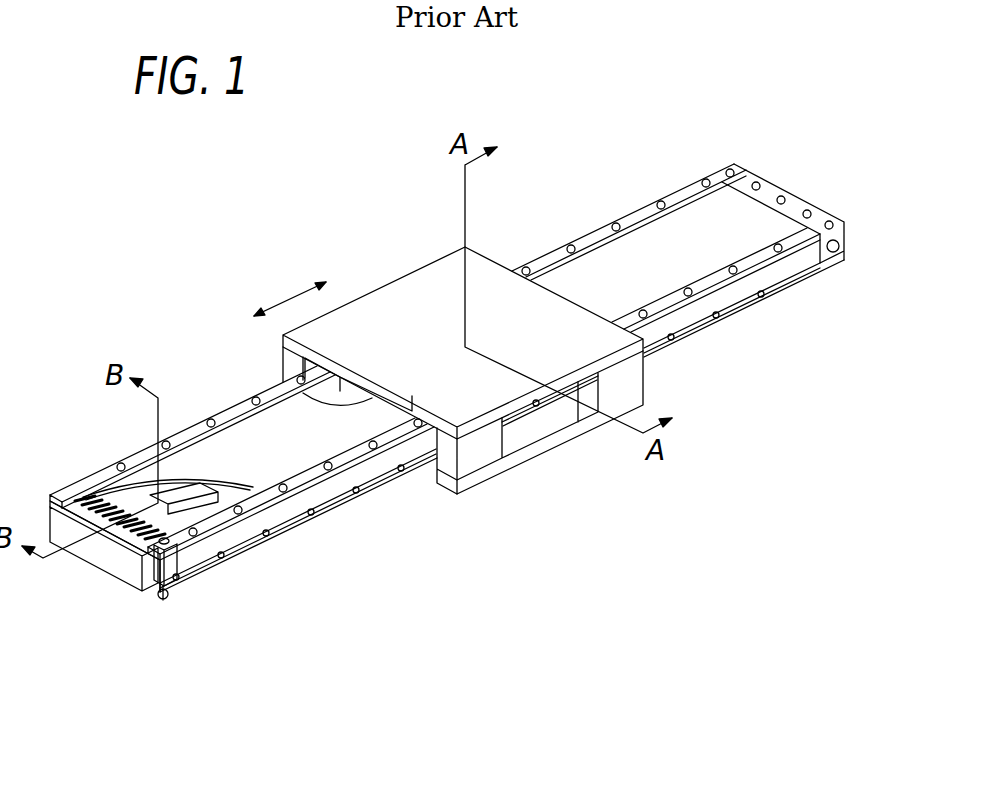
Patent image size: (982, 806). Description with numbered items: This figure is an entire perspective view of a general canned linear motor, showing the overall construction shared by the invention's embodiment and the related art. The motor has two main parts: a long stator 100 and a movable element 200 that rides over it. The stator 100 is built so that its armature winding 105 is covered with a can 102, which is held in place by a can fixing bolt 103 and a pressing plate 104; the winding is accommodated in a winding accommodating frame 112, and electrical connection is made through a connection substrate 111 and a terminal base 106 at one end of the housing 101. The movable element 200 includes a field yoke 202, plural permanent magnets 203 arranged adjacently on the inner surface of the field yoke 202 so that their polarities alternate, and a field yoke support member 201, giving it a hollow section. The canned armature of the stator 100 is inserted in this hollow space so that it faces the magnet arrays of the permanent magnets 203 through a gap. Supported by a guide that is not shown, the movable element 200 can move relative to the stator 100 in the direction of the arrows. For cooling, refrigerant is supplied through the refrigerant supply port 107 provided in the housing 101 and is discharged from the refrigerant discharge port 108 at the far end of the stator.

The stator 100 is at (152, 445).
The housing 101 is at (370, 470).
The can 102 is at (284, 461).
The can fixing bolt 103 is at (570, 247).
The pressing plate 104 is at (618, 221).
The armature winding 105 is at (230, 527).
The terminal base 106 is at (103, 560).
The refrigerant supply port 107 is at (182, 568).
The refrigerant discharge port 108 is at (835, 254).
The connection substrate 111 is at (152, 589).
The winding accommodating frame 112 is at (228, 498).
The movable element 200 is at (388, 283).
The field yoke support member 201 is at (627, 383).
The field yoke 202 is at (432, 284).
The permanent magnet 203 is at (346, 403).